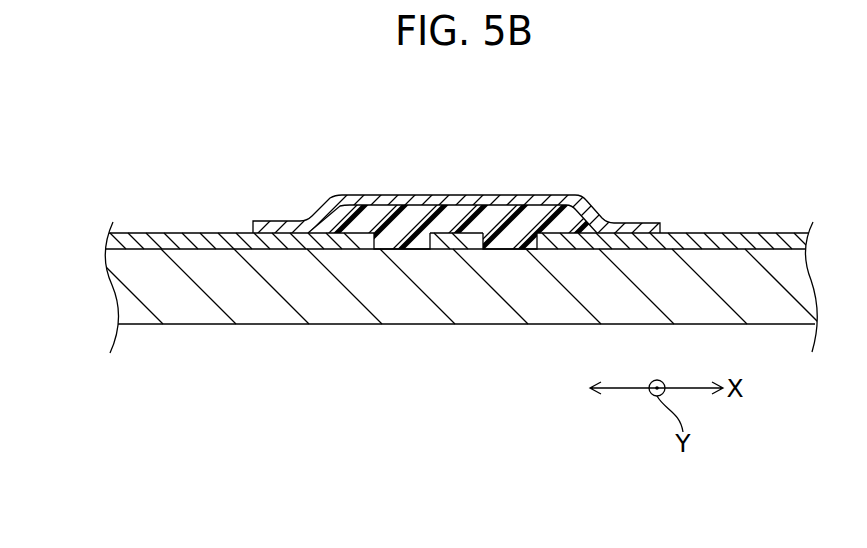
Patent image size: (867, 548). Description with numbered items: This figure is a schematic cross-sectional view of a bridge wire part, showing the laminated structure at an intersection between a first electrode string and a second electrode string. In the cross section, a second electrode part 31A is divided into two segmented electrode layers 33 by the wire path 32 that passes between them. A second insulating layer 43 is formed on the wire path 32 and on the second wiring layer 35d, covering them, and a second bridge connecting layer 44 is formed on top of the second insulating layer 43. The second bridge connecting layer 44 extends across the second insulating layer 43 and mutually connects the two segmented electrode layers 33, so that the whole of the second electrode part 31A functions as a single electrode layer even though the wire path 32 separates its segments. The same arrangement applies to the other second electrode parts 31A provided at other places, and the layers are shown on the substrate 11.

The substrate 11 is at (752, 312).
The second electrode part 31A is at (457, 329).
The segmented electrode layers 33 is at (243, 242).
The second insulating layer 43 is at (381, 222).
The second wiring layer 35d is at (460, 222).
The wire path 32 is at (520, 240).
The second bridge connecting layer 44 is at (578, 195).